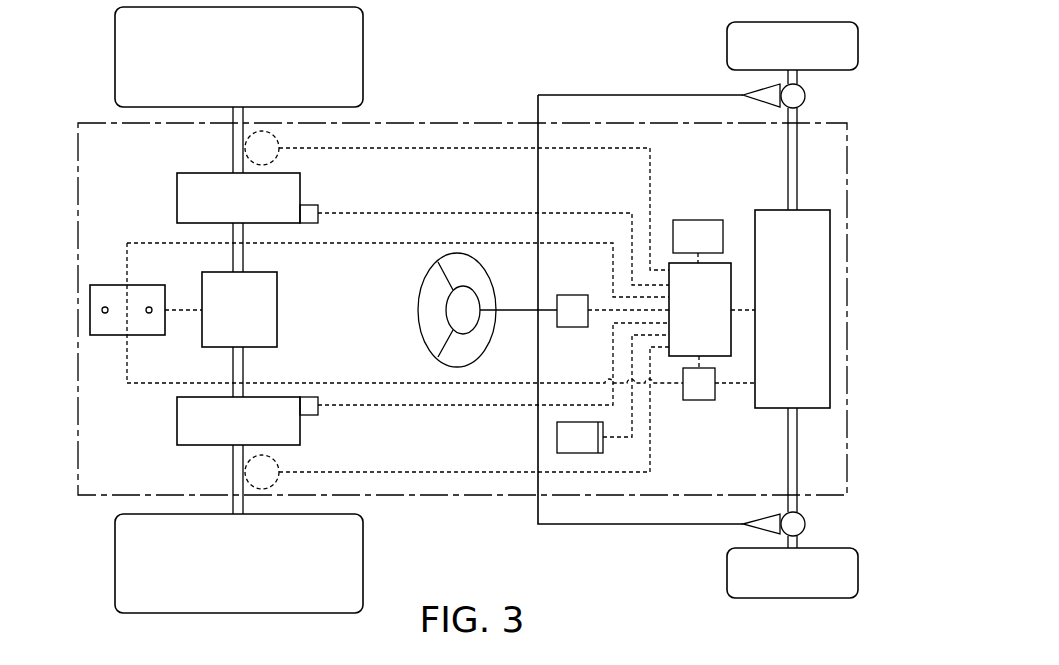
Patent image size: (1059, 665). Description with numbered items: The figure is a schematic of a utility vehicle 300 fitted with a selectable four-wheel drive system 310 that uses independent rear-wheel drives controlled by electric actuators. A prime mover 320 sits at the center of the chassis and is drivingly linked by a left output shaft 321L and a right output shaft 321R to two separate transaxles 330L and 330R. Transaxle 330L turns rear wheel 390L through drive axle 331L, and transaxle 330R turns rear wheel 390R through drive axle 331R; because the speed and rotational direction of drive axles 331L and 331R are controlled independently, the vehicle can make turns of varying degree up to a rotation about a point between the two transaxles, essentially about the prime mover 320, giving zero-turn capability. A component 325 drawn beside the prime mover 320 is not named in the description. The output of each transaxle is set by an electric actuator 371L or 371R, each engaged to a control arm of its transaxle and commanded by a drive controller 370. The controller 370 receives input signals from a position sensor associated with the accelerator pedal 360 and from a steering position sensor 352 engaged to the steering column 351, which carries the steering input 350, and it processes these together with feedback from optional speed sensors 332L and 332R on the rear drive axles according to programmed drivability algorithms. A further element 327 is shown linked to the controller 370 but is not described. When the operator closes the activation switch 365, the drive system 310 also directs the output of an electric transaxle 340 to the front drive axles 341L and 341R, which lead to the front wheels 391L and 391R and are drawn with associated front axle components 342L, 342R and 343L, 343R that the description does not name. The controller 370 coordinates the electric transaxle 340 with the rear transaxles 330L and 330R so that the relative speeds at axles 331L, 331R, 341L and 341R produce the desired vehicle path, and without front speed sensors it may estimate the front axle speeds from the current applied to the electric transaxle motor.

The utility vehicle 300 is at (460, 84).
The selectable four-wheel drive system 310 is at (141, 163).
The prime mover 320 is at (277, 310).
The output shaft 321L is at (245, 252).
The output shaft 321R is at (245, 370).
The battery 325 is at (90, 310).
The reverse selector 327 is at (700, 400).
The transaxle 330L is at (177, 200).
The transaxle 330R is at (177, 425).
The drive axle 331L is at (232, 141).
The drive axle 331R is at (232, 468).
The speed sensor 332L is at (276, 158).
The speed sensor 332R is at (276, 462).
The electric transaxle 340 is at (830, 320).
The front drive axle 341L is at (800, 178).
The front drive axle 341R is at (800, 440).
The left front wheel axle 342L is at (800, 77).
The right front wheel axle 342R is at (800, 546).
The left front brake 343L is at (798, 100).
The right front brake 343R is at (799, 519).
The steering wheel 350 is at (438, 276).
The steering column 351 is at (517, 305).
The steering position sensor 352 is at (572, 327).
The accelerator pedal 360 is at (557, 437).
The activation switch 365 is at (700, 220).
The drive controller 370 is at (668, 262).
The electric actuator 371L is at (310, 206).
The electric actuator 371R is at (310, 416).
The rear wheel 390L is at (211, 62).
The rear wheel 390R is at (209, 579).
The left front wheel 391L is at (764, 61).
The right front wheel 391R is at (762, 588).